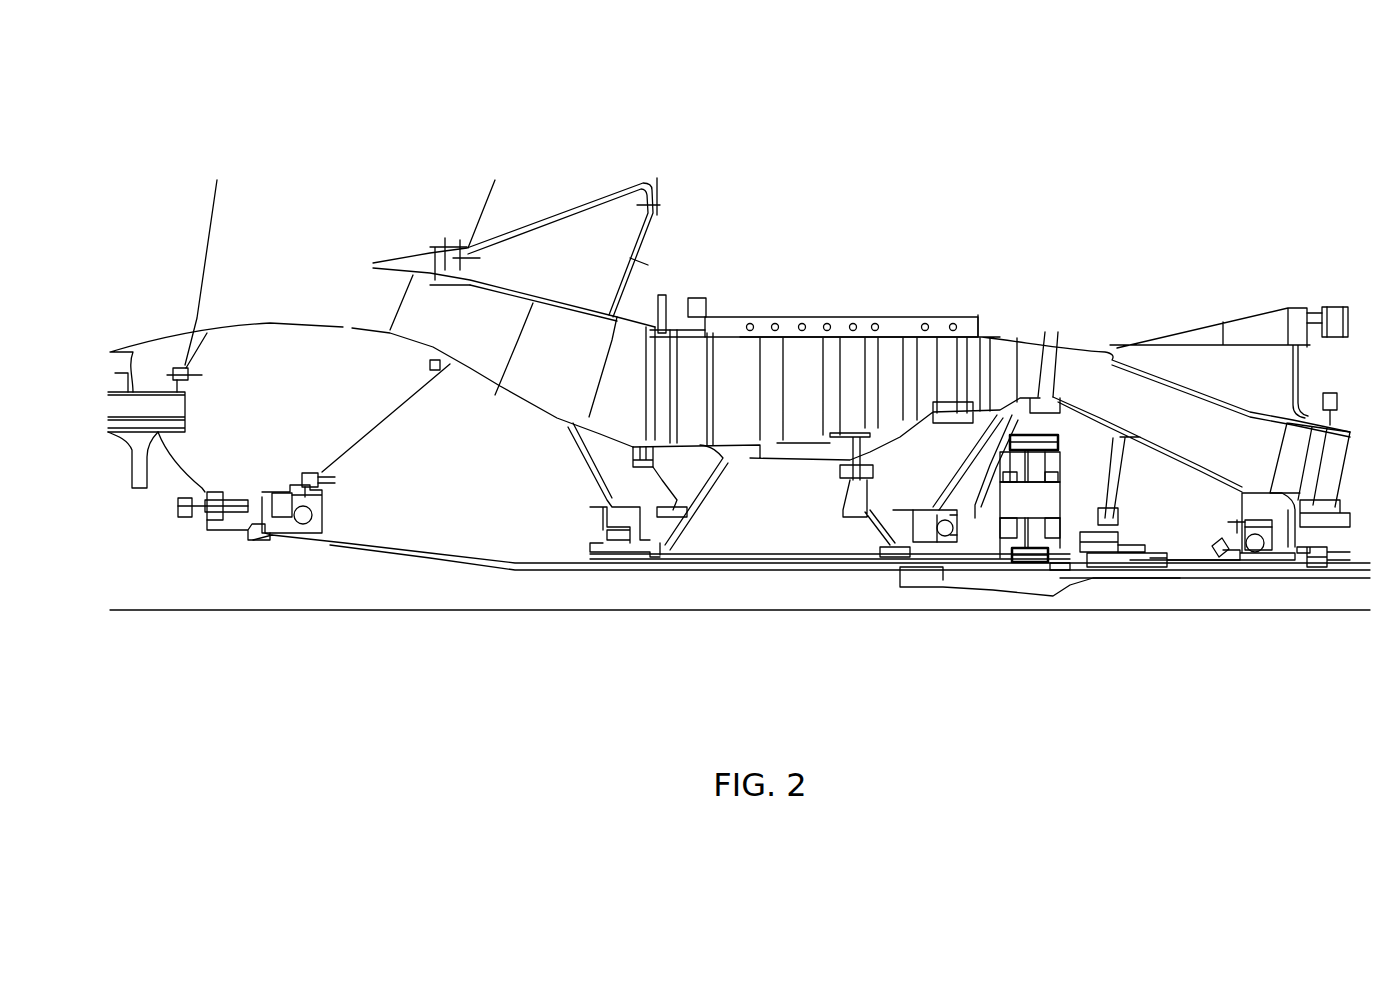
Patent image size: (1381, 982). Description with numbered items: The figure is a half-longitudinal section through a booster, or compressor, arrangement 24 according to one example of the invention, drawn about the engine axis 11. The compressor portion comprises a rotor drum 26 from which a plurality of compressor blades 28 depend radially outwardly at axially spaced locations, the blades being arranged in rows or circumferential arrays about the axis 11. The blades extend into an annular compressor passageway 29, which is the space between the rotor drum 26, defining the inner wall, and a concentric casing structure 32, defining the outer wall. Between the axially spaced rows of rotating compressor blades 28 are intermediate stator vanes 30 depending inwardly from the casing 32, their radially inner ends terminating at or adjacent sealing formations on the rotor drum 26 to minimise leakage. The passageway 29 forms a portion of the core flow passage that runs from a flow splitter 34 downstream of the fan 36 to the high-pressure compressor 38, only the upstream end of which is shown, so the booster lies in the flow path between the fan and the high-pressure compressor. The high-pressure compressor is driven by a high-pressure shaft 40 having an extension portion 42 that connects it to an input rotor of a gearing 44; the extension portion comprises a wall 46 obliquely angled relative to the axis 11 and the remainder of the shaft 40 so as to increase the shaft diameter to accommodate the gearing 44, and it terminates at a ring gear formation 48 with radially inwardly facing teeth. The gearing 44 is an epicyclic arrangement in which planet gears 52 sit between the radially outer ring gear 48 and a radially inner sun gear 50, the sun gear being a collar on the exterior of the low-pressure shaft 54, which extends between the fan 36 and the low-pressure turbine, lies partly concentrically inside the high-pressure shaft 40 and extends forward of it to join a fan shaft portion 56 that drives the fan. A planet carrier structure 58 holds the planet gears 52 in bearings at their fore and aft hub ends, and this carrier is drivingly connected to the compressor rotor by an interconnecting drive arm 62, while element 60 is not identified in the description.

The axis 11 is at (298, 612).
The booster arrangement 24 is at (1015, 185).
The rotor drum 26 is at (753, 450).
The compressor blades 28 is at (922, 352).
The annular compressor passageway 29 is at (692, 363).
The stator vanes 30 is at (950, 358).
The casing structure 32 is at (922, 318).
The flow splitter 34 is at (370, 262).
The fan 36 is at (205, 215).
The high-pressure compressor 38 is at (1360, 452).
The high-pressure shaft 40 is at (1283, 568).
The extension portion 42 is at (1162, 565).
The gearing 44 is at (1058, 500).
The wall 46 is at (1058, 492).
The ring gear formation 48 is at (1036, 418).
The sun gear 50 is at (1035, 568).
The planet gears 52 is at (1035, 472).
The low-pressure shaft 54 is at (1000, 594).
The fan shaft portion 56 is at (455, 570).
The planet carrier structure 58 is at (983, 503).
The bearing 60 is at (947, 535).
The interconnecting drive arm 62 is at (870, 518).